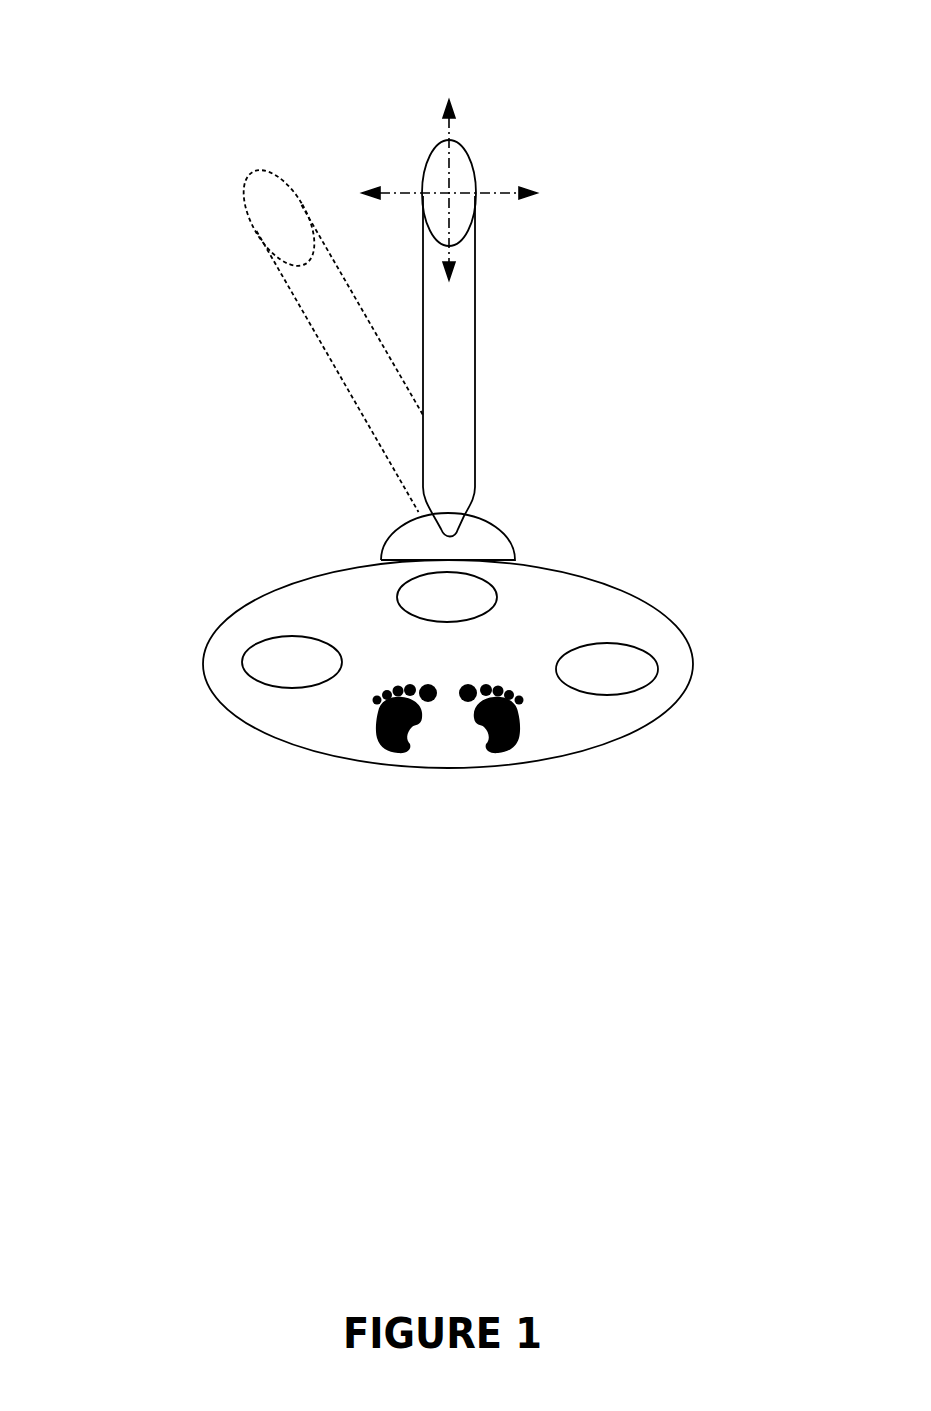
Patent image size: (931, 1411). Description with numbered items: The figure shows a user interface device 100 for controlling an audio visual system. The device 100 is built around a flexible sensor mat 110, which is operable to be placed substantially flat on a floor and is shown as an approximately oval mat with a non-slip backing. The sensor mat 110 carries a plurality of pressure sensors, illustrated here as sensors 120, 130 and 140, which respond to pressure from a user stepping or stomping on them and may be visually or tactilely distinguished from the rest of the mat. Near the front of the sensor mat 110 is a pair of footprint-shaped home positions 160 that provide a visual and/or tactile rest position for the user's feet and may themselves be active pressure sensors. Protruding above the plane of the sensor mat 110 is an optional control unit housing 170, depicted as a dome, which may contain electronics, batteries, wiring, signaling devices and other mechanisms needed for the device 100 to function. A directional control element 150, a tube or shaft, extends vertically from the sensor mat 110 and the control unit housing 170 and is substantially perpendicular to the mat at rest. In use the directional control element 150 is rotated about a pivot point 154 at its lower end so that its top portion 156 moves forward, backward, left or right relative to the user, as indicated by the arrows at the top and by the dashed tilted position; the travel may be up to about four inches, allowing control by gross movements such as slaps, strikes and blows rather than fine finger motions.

The user interface device 100 is at (65, 42).
The flexible sensor mat 110 is at (572, 616).
The pressure sensor 120 is at (312, 674).
The pressure sensor 130 is at (466, 608).
The pressure sensor 140 is at (628, 676).
The directional control element 150 is at (482, 343).
The pivot point 154 is at (448, 527).
The top portion 156 is at (462, 173).
The home position 160 is at (480, 732).
The control unit housing 170 is at (480, 537).